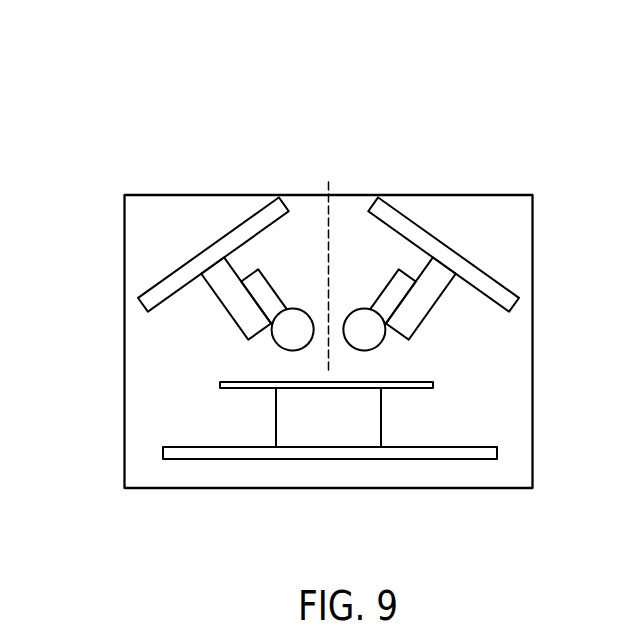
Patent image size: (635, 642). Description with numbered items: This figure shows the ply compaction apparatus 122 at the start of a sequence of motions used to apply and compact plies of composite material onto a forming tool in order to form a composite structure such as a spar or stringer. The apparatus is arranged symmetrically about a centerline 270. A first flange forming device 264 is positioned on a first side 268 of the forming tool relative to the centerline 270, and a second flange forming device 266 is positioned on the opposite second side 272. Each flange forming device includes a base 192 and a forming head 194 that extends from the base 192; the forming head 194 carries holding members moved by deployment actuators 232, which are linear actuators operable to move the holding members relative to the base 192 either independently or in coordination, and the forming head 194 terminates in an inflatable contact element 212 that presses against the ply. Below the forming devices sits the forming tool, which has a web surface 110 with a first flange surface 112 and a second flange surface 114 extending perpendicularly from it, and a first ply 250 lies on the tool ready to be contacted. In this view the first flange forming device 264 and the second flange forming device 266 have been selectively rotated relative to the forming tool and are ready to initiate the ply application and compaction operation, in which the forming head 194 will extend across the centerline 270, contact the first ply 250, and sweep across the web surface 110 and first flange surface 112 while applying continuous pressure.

The ply compaction apparatus 122 is at (453, 127).
The centerline 270 is at (329, 299).
The base 192 is at (155, 257).
The forming head 194 is at (197, 310).
The deployment actuator 232 is at (383, 288).
The contact element 212 is at (358, 309).
The first ply 250 is at (373, 382).
The second flange surface 114 is at (277, 430).
The web surface 110 is at (340, 388).
The first flange surface 112 is at (383, 436).
The second flange forming device 266 is at (177, 223).
The first flange forming device 264 is at (505, 208).
The second side 272 is at (155, 377).
The first side 268 is at (512, 373).